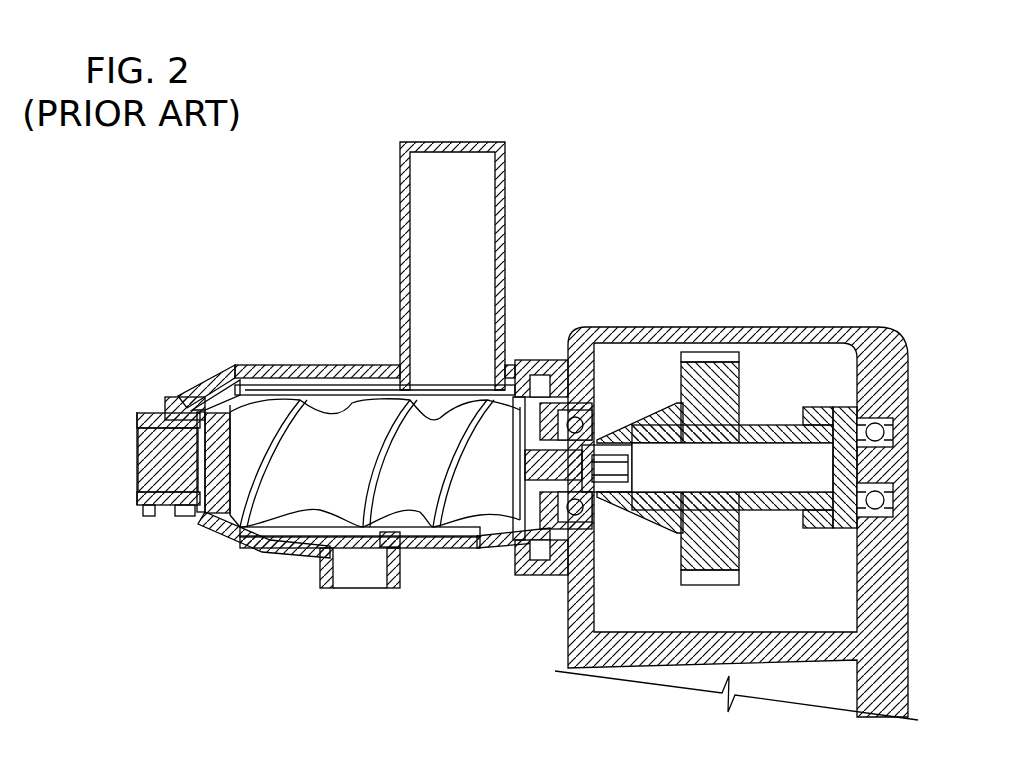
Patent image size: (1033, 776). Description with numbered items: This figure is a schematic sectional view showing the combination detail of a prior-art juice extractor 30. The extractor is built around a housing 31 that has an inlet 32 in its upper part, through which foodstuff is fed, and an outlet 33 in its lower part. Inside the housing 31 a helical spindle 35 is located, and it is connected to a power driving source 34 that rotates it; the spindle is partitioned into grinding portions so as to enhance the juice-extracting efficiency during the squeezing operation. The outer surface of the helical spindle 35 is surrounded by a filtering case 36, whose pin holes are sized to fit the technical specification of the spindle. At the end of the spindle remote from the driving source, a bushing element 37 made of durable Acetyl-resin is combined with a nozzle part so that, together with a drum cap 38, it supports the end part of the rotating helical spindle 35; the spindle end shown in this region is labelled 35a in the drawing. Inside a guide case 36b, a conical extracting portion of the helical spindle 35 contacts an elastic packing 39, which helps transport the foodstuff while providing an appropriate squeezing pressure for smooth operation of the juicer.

The juice extractor 30 is at (258, 282).
The housing 31 is at (293, 365).
The inlet 32 is at (398, 253).
The outlet 33 is at (357, 578).
The power driving source 34 is at (645, 326).
The helical spindle 35 is at (358, 437).
The rotor shaft 35a is at (149, 463).
The filtering case 36 is at (310, 393).
The guide case 36b is at (217, 392).
The bushing element 37 is at (140, 503).
The drum cap 38 is at (170, 407).
The elastic packing 39 is at (195, 410).